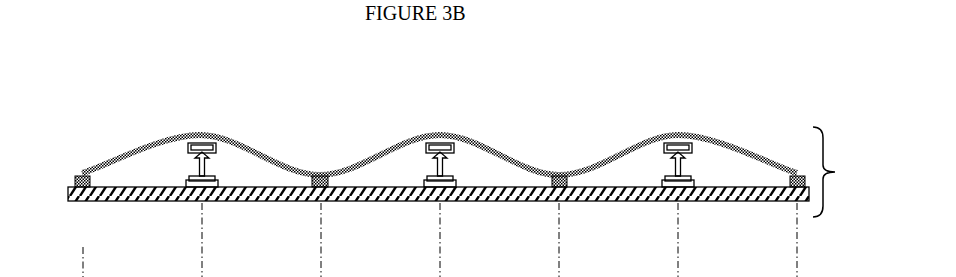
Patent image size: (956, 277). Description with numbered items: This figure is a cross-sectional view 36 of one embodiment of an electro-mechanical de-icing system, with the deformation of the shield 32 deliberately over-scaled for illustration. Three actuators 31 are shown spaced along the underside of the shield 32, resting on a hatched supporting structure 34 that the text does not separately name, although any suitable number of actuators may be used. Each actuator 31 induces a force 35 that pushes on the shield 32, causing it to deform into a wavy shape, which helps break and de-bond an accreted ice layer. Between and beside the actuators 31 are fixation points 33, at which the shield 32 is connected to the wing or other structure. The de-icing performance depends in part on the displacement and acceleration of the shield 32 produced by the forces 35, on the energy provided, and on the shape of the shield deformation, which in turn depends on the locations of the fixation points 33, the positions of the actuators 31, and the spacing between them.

The actuator 31 is at (675, 138).
The shield 32 is at (152, 142).
The fixation point 33 is at (545, 202).
The base plate 34 is at (173, 202).
The force 35 is at (428, 143).
The cross-sectional view 36 is at (840, 172).